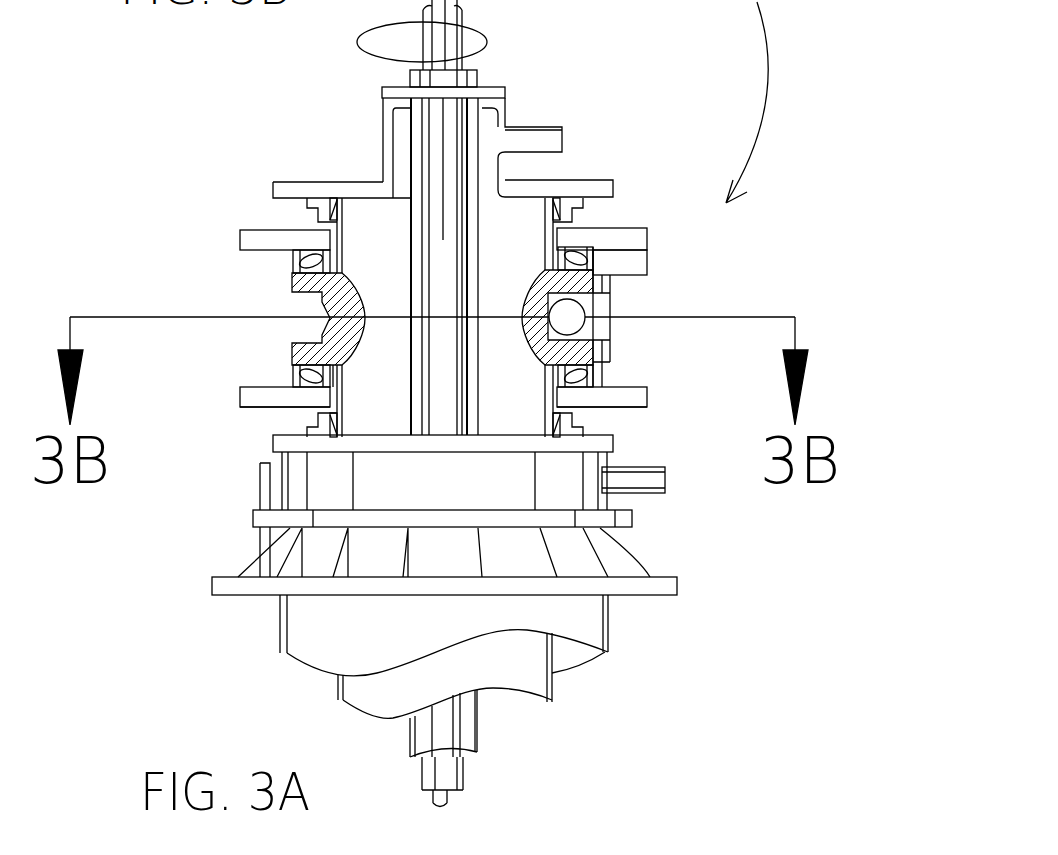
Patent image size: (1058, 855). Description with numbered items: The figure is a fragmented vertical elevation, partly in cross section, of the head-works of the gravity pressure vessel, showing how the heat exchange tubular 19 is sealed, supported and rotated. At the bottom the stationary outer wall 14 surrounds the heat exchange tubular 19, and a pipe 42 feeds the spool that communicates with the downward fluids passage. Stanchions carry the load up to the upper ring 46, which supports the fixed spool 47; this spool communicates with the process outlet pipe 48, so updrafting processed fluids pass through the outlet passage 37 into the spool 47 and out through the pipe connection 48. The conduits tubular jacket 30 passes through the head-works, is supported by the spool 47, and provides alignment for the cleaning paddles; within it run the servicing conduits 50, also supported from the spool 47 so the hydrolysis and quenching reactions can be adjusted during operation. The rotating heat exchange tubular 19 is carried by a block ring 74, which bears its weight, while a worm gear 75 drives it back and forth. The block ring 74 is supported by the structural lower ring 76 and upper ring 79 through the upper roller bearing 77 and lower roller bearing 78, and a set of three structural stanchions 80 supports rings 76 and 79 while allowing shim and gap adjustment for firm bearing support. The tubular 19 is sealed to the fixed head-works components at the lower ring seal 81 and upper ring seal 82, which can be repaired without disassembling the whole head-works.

The outer wall 14 is at (608, 625).
The heat exchange tubular 19 is at (338, 685).
The conduits tubular jacket 30 is at (412, 357).
The outlet passage 37 is at (385, 247).
The pipe 42 is at (657, 495).
The upper ring 46 is at (305, 181).
The fixed spool 47 is at (380, 117).
The process outlet pipe 48 is at (543, 123).
The servicing conduits 50 is at (380, 33).
The block ring 74 is at (325, 328).
The worm gear 75 is at (586, 302).
The structural lower ring 76 is at (290, 398).
The upper roller bearing 77 is at (293, 262).
The lower roller bearing 78 is at (293, 362).
The upper ring 79 is at (262, 235).
The structural stanchions 80 is at (648, 265).
The lower ring seal 81 is at (295, 432).
The upper ring seal 82 is at (320, 214).